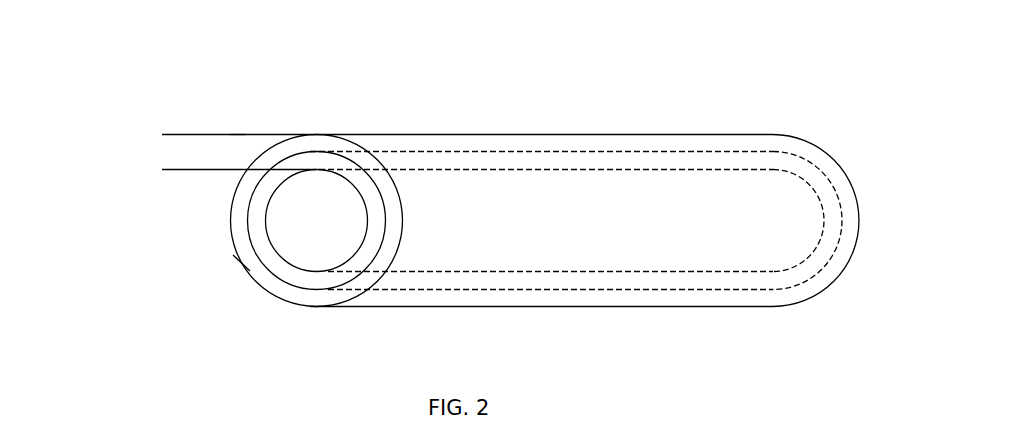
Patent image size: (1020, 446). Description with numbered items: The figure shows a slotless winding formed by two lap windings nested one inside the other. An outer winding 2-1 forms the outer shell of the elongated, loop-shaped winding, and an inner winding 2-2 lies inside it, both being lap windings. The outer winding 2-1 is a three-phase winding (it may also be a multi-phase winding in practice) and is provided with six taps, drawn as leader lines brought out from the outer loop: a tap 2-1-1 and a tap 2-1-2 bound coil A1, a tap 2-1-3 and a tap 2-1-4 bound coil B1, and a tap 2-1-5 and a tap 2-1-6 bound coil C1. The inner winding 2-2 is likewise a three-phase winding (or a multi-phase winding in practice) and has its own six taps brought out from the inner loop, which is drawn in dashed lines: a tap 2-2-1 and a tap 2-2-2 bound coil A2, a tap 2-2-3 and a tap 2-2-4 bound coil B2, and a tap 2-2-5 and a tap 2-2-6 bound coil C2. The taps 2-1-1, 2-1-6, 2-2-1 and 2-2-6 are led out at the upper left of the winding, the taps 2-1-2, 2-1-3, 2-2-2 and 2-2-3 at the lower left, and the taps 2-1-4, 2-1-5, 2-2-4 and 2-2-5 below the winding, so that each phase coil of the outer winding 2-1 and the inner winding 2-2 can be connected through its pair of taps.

The outer winding 2-1 is at (393, 206).
The inner winding 2-2 is at (262, 193).
The tap of the outer three-phase winding 2-1-1 is at (433, 135).
The tap of the outer three-phase winding 2-1-2 is at (241, 263).
The tap of the outer three-phase winding 2-1-3 is at (180, 272).
The tap of the outer three-phase winding 2-1-4 is at (432, 345).
The tap of the outer three-phase winding 2-1-5 is at (412, 301).
The tap of the outer three-phase winding 2-1-6 is at (169, 122).
The tap of the inner three-phase winding 2-2-1 is at (439, 171).
The tap of the inner three-phase winding 2-2-2 is at (430, 245).
The tap of the inner three-phase winding 2-2-3 is at (360, 246).
The tap of the inner three-phase winding 2-2-4 is at (228, 286).
The tap of the inner three-phase winding 2-2-5 is at (203, 332).
The tap of the inner three-phase winding 2-2-6 is at (439, 157).